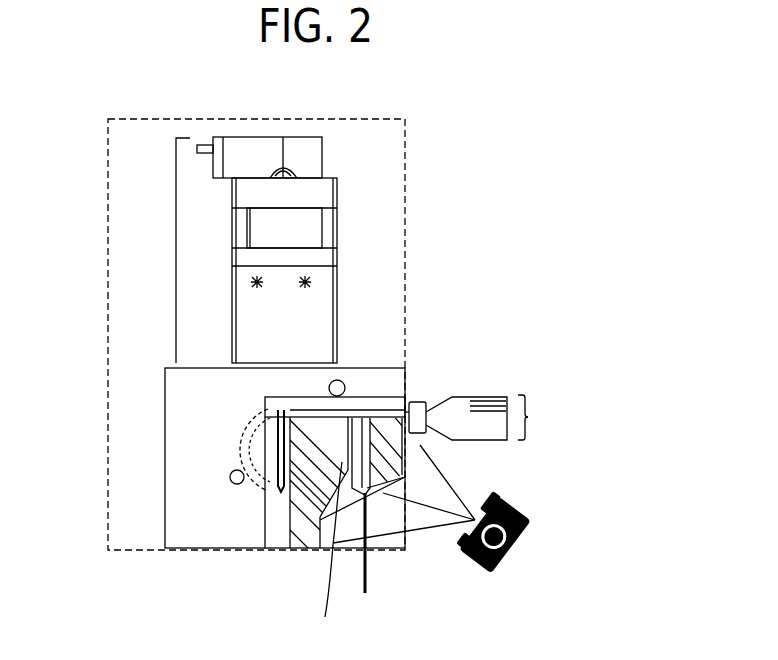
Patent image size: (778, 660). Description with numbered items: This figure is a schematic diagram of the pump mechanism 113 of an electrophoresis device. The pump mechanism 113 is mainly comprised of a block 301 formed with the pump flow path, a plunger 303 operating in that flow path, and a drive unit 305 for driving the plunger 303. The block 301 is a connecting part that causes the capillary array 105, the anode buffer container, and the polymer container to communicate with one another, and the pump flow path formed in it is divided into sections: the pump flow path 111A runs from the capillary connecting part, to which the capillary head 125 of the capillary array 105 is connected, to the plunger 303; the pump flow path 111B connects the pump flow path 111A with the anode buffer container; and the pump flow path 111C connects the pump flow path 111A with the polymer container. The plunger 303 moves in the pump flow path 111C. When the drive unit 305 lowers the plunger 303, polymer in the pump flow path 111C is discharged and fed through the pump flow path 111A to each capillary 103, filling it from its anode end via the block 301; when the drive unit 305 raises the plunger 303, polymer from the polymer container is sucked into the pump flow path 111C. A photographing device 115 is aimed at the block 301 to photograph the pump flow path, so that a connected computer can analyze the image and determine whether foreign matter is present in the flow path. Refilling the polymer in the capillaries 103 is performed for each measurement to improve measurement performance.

The pump mechanism 113 is at (150, 117).
The drive unit 305 is at (176, 252).
The block 301 is at (170, 440).
The plunger 303 is at (268, 430).
The pump flow path 111A is at (340, 380).
The pump flow path 111B is at (326, 558).
The pump flow path 111C is at (216, 493).
The capillary head 125 is at (415, 400).
The capillary 103 is at (487, 397).
The capillary array 105 is at (501, 376).
The photographing device 115 is at (515, 500).